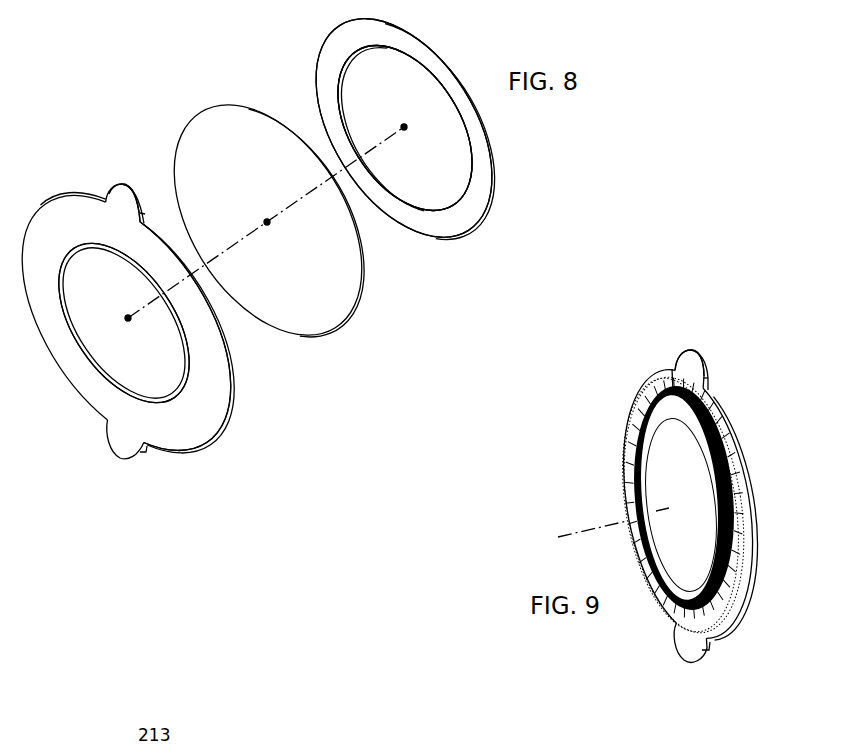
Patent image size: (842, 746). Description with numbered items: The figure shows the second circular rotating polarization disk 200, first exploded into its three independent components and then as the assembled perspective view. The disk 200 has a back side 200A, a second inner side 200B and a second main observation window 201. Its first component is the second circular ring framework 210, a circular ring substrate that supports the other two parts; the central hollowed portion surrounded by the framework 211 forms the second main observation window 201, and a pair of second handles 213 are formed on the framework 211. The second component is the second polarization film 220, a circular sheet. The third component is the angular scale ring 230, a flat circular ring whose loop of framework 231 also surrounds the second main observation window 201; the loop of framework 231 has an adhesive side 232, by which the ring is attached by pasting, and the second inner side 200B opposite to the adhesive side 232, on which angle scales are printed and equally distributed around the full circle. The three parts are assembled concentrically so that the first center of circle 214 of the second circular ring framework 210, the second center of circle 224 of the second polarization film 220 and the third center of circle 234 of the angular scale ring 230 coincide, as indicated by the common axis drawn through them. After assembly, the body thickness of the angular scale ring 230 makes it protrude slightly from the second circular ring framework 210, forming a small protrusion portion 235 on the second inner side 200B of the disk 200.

In FIG. 8, the second circular rotating polarization disk 200 is at (170, 103).
In FIG. 9, the second circular rotating polarization disk 200 is at (599, 462).
In FIG. 8, the back side 200A is at (156, 343).
In FIG. 9, the second inner side 200B is at (681, 505).
In FIG. 8, the second main observation window 201 is at (266, 224).
In FIG. 8, the second circular ring framework 210 is at (176, 449).
In FIG. 8, the framework 211 is at (124, 321).
In FIG. 8, the second handles 213 is at (117, 192).
In FIG. 8, the first center of circle 214 is at (128, 318).
In FIG. 8, the second polarization film 220 is at (269, 219).
In FIG. 8, the second center of circle 224 is at (267, 222).
In FIG. 8, the angular scale ring 230 is at (467, 220).
In FIG. 8, the loop of framework 231 is at (404, 134).
In FIG. 8, the adhesive side 232 is at (405, 129).
In FIG. 8, the third center of circle 234 is at (404, 127).
In FIG. 9, the protrusion portion 235 is at (672, 367).